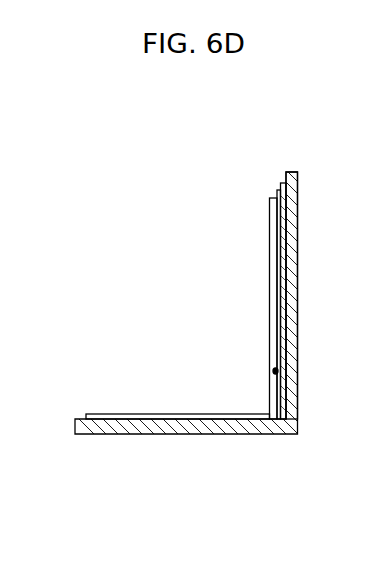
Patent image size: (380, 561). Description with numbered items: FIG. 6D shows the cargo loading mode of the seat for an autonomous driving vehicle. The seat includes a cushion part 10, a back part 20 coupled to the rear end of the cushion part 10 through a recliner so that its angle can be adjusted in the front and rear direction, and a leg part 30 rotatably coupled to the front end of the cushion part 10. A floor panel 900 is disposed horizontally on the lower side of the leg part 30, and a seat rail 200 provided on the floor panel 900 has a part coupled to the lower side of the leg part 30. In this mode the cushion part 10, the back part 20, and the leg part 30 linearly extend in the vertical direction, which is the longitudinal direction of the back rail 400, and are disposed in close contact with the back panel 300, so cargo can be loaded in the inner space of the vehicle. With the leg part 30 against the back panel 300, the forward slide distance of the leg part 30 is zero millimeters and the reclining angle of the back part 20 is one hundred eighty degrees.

The floor panel 900 is at (185, 435).
The back panel 300 is at (291, 172).
The back rail 400 is at (272, 190).
The back part 20 is at (270, 238).
The cushion part 10 is at (270, 305).
The leg part 30 is at (275, 372).
The seat rail 200 is at (130, 414).